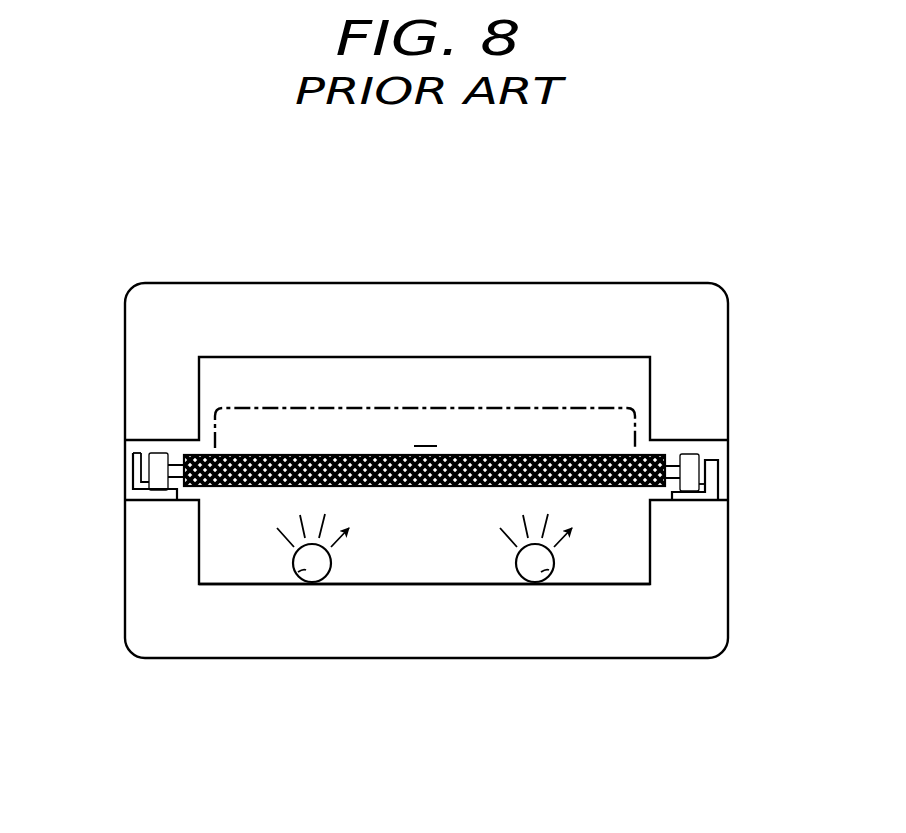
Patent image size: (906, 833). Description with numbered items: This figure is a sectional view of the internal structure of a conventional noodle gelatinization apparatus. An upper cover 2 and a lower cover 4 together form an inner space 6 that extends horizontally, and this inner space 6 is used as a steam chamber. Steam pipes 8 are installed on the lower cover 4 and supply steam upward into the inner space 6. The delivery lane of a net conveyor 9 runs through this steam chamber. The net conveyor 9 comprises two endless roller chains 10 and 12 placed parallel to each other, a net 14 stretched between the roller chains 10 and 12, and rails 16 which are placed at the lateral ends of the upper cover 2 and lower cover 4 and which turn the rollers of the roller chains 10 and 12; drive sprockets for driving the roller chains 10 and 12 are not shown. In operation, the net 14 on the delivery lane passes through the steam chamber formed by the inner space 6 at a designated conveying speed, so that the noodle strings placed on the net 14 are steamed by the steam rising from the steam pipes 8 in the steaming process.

The upper cover 2 is at (308, 357).
The lower cover 4 is at (425, 585).
The inner space 6 is at (402, 395).
The steam pipes 8 is at (297, 580).
The net conveyor 9 is at (608, 494).
The endless roller chain 10 is at (148, 464).
The endless roller chain 12 is at (694, 466).
The net 14 is at (262, 488).
The rails 16 is at (158, 499).